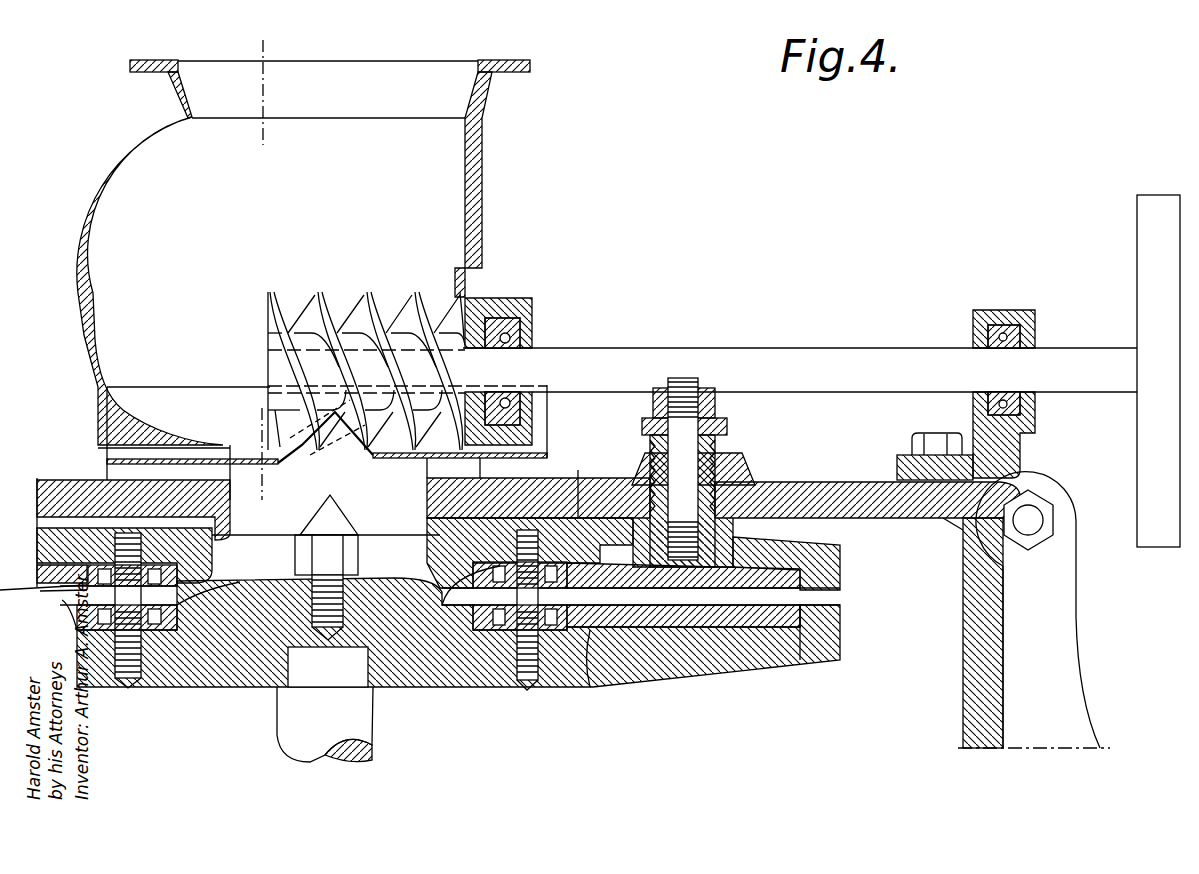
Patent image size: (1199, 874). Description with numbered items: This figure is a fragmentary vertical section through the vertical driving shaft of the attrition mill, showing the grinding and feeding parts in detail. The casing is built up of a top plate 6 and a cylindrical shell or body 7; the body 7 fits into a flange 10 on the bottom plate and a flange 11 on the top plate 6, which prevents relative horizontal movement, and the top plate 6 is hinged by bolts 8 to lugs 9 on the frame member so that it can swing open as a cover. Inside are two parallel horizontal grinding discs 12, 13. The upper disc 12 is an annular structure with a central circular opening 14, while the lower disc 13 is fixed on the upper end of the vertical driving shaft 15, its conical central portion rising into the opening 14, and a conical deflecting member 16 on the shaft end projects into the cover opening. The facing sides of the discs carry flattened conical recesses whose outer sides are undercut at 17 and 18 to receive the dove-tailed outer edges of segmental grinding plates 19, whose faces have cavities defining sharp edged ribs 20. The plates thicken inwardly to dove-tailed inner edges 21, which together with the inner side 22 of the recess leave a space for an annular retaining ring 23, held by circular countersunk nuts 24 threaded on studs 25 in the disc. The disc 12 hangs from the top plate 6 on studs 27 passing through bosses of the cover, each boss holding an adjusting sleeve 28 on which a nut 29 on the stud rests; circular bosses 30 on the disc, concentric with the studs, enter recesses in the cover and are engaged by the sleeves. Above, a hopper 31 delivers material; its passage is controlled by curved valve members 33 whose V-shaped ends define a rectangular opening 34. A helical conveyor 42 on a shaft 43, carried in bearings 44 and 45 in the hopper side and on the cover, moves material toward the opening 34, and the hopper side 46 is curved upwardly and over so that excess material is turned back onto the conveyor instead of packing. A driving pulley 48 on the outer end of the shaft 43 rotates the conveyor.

The top plate 6 is at (38, 500).
The cylindrical shell or body 7 is at (970, 657).
The bolts 8 is at (1031, 520).
The lugs 9 is at (1055, 628).
The flange 10 is at (262, 265).
The flange 11 is at (955, 530).
The grinding disc 12 is at (52, 545).
The grinding disc 13 is at (185, 672).
The central circular opening 14 is at (326, 545).
The vertical driving shaft 15 is at (303, 710).
The conical deflecting member 16 is at (325, 516).
The undercut side 17 is at (800, 578).
The undercut side 18 is at (840, 612).
The segmental grinding plates 19 is at (768, 572).
The sharp edged ribs 20 is at (640, 597).
The inclined or dove-tailed inner edges 21 is at (578, 518).
The inner side of the recess 22 is at (455, 690).
The annular retaining ring 23 is at (178, 578).
The circular countersunk nuts 24 is at (322, 596).
The studs 25 is at (122, 530).
The studs 27 is at (690, 455).
The adjusting sleeve 28 is at (727, 427).
The nut 29 is at (705, 392).
The circular bosses 30 is at (635, 480).
The hopper 31 is at (490, 196).
The valve members 33 is at (175, 397).
The rectangular opening 34 is at (320, 435).
The feeder or helical conveyor 42 is at (365, 300).
The shaft 43 is at (596, 366).
The bearing 44 is at (505, 297).
The bearing 45 is at (1000, 310).
The curved side of the hopper 46 is at (100, 292).
The driving pulley 48 is at (1158, 226).